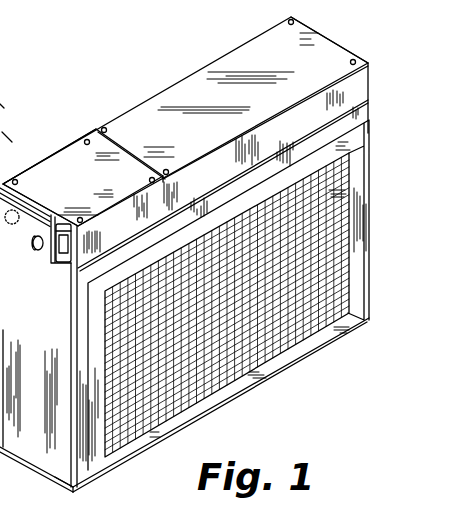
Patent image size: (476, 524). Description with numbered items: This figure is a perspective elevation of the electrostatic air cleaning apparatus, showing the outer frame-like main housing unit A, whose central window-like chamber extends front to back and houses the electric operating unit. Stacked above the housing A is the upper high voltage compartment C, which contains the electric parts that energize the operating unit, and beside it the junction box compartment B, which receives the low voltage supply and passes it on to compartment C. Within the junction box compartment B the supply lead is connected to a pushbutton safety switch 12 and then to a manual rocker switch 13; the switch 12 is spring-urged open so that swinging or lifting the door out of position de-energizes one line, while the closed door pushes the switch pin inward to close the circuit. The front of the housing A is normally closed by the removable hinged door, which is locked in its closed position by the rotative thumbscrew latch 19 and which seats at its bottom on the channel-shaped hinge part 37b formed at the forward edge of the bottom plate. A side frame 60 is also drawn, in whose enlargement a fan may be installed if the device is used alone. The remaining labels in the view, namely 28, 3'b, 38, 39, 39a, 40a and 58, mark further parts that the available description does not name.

The main frame-like housing unit A is at (363, 127).
The junction box compartment B is at (72, 148).
The high voltage compartment C is at (235, 52).
The pushbutton safety switch 12 is at (12, 224).
The manual rocker switch 13 is at (62, 250).
The rotative thumbscrew latch 19 is at (35, 232).
The member 28 is at (14, 93).
The member 3'b is at (16, 124).
The hinge part 37b is at (70, 490).
The plate edge 38 is at (64, 152).
The lid top surface 39 is at (320, 44).
The holes 39a is at (82, 218).
The rail 40a is at (54, 236).
The grille 58 is at (335, 288).
The side frame 60 is at (369, 240).